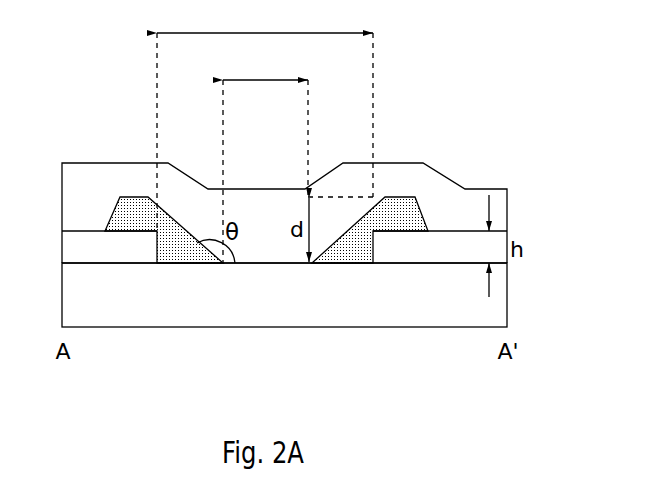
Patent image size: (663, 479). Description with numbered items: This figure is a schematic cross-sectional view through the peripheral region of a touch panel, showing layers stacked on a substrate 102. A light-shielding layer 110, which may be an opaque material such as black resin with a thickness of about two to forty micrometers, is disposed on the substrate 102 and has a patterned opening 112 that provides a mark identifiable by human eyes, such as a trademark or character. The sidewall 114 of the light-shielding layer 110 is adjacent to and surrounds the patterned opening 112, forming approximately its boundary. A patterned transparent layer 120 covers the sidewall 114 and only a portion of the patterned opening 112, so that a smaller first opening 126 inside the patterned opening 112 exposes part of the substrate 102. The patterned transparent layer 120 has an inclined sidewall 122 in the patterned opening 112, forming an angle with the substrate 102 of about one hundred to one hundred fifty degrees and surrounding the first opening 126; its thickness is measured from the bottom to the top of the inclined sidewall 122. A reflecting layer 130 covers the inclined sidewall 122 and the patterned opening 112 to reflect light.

The substrate 102 is at (130, 295).
The light-shielding layer 110 is at (95, 248).
The patterned opening 112 is at (265, 117).
The sidewall 114 is at (360, 263).
The patterned transparent layer 120 is at (342, 233).
The inclined sidewall 122 is at (183, 240).
The first opening 126 is at (265, 155).
The reflecting layer 130 is at (398, 175).